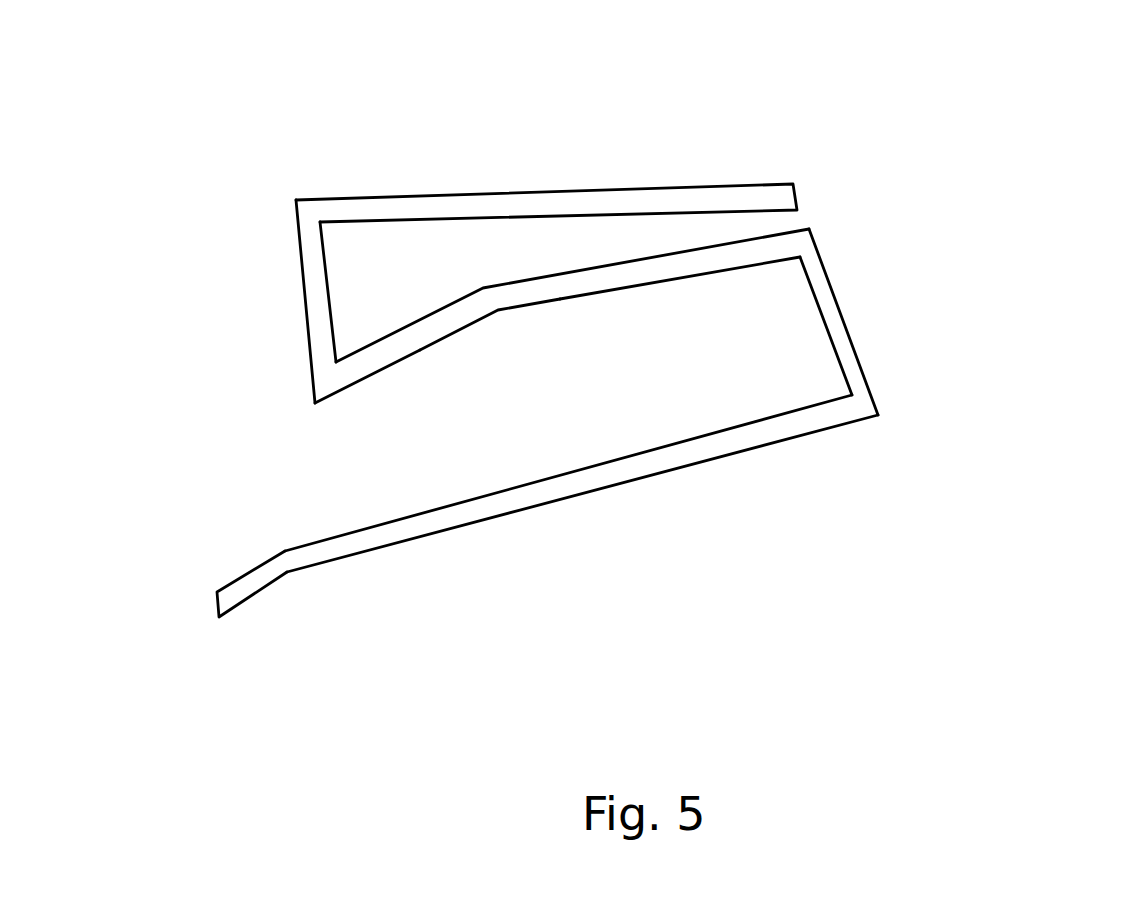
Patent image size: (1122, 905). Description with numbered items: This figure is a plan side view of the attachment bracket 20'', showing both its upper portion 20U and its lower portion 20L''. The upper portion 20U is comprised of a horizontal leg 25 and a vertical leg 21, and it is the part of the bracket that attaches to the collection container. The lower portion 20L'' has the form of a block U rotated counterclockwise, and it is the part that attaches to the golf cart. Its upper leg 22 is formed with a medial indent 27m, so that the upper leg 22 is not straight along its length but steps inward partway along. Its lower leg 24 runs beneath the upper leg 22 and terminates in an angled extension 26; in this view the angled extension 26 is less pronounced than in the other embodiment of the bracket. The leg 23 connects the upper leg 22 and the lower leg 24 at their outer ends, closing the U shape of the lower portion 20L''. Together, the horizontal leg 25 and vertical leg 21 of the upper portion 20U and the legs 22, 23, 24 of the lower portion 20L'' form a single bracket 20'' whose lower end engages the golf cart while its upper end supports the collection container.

The attachment bracket 20'' is at (579, 352).
The upper portion 20U is at (491, 250).
The lower portion 20L'' is at (569, 447).
The vertical leg 21 is at (292, 307).
The upper leg 22 is at (612, 303).
The leg 23 is at (863, 298).
The lower leg 24 is at (662, 487).
The horizontal leg 25 is at (478, 182).
The angled extension 26 is at (182, 626).
The medial indent 27m is at (511, 330).